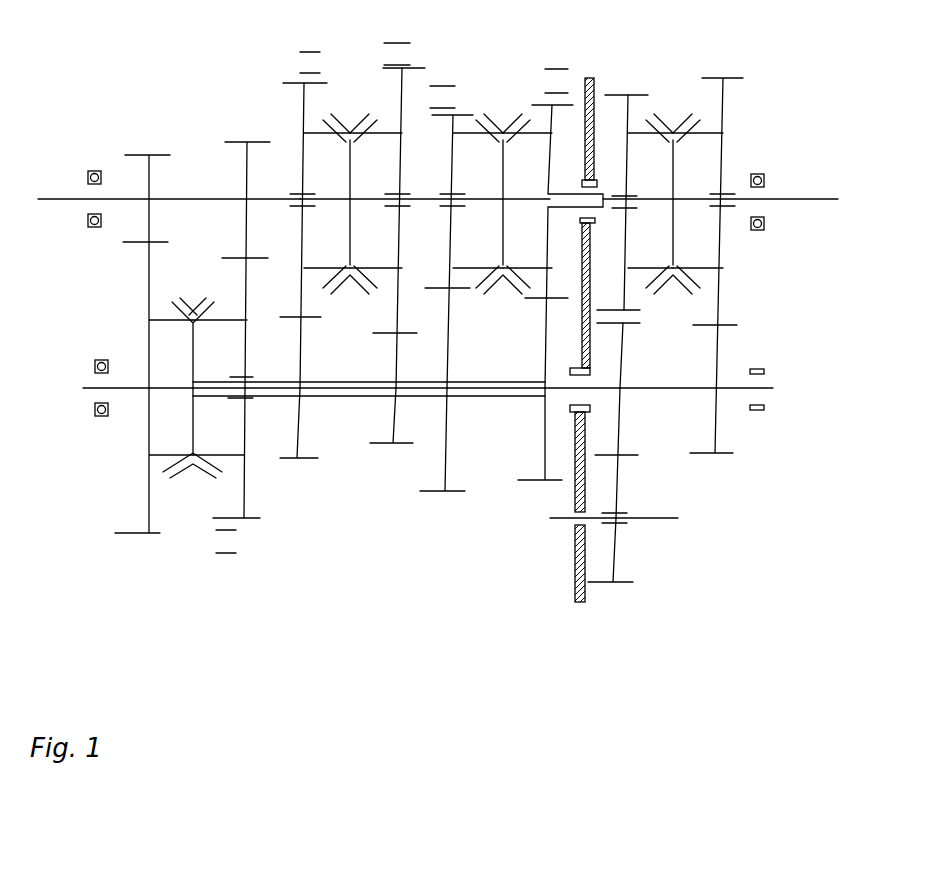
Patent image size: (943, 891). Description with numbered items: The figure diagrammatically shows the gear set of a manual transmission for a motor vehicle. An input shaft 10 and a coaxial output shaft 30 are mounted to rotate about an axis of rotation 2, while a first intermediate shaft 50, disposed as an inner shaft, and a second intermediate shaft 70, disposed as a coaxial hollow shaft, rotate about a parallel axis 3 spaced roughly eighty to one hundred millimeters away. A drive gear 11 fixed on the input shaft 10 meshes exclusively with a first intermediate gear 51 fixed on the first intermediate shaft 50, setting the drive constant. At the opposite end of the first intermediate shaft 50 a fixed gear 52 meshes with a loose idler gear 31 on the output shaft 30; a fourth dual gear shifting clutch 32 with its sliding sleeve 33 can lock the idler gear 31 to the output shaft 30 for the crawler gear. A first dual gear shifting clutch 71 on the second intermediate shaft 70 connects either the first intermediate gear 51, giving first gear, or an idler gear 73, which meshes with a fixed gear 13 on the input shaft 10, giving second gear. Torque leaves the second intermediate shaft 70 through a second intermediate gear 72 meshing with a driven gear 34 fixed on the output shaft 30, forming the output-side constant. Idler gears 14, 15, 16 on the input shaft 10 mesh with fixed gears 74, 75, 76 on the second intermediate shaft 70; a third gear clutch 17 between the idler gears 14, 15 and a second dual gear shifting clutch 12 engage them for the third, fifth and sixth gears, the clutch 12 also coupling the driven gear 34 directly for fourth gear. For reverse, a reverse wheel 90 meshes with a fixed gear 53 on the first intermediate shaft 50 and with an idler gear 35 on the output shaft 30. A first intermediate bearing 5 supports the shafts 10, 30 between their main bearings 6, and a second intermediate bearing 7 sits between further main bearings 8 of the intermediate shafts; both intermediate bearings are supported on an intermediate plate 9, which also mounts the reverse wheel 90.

The axis of rotation 2 is at (68, 202).
The axis 3 is at (773, 391).
The first intermediate bearing 5 is at (592, 228).
The main bearings 6 is at (94, 228).
The second intermediate bearing 7 is at (587, 458).
The further main bearings 8 is at (99, 418).
The intermediate plate 9 is at (580, 602).
The input shaft 10 is at (52, 192).
The drive gear 11 is at (163, 155).
The second dual gear shifting clutch 12 is at (495, 128).
The fixed gear 13 is at (240, 137).
The idler gear 14 is at (283, 83).
The idler gear 15 is at (385, 68).
The idler gear 16 is at (462, 113).
The third gear clutch 17 is at (343, 122).
The output shaft 30 is at (787, 197).
The idler gear 31 is at (723, 97).
The fourth dual gear shifting clutch 32 is at (673, 118).
The sliding sleeve 33 is at (641, 316).
The driven gear 34 is at (540, 105).
The idler gear 35 is at (612, 93).
The first intermediate shaft 50 is at (90, 392).
The first intermediate gear 51 is at (137, 540).
The fixed gear 52 is at (730, 458).
The fixed gear 53 is at (632, 460).
The second intermediate shaft 70 is at (507, 397).
The first dual gear shifting clutch 71 is at (205, 470).
The second intermediate gear 72 is at (548, 485).
The idler gear 73 is at (260, 515).
The fixed gear 74 is at (313, 460).
The fixed gear 75 is at (390, 450).
The fixed gear 76 is at (445, 495).
The reverse wheel 90 is at (630, 585).